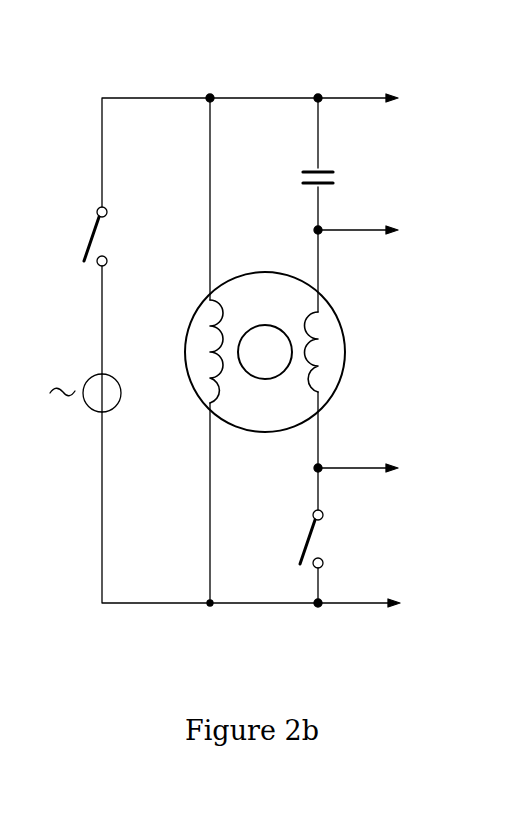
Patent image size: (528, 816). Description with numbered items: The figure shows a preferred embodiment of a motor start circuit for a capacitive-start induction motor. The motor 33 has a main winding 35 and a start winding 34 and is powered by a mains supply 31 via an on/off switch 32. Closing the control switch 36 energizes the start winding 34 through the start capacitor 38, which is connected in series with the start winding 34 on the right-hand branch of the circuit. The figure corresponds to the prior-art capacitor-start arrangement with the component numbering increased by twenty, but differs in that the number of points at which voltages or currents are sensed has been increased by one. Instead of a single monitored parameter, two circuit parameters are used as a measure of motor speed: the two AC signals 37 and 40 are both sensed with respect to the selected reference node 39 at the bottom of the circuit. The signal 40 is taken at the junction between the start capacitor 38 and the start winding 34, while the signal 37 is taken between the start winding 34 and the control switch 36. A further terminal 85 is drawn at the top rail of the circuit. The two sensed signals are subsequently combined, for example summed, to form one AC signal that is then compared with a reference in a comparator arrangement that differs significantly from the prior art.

The mains supply 31 is at (88, 378).
The on/off switch 32 is at (90, 232).
The motor 33 is at (268, 272).
The start winding 34 is at (312, 330).
The main winding 35 is at (207, 325).
The control switch 36 is at (313, 538).
The circuit parameter 37 is at (372, 463).
The start capacitor 38 is at (328, 165).
The reference node 39 is at (372, 598).
The circuit parameter 40 is at (370, 225).
The terminal 85 is at (372, 93).